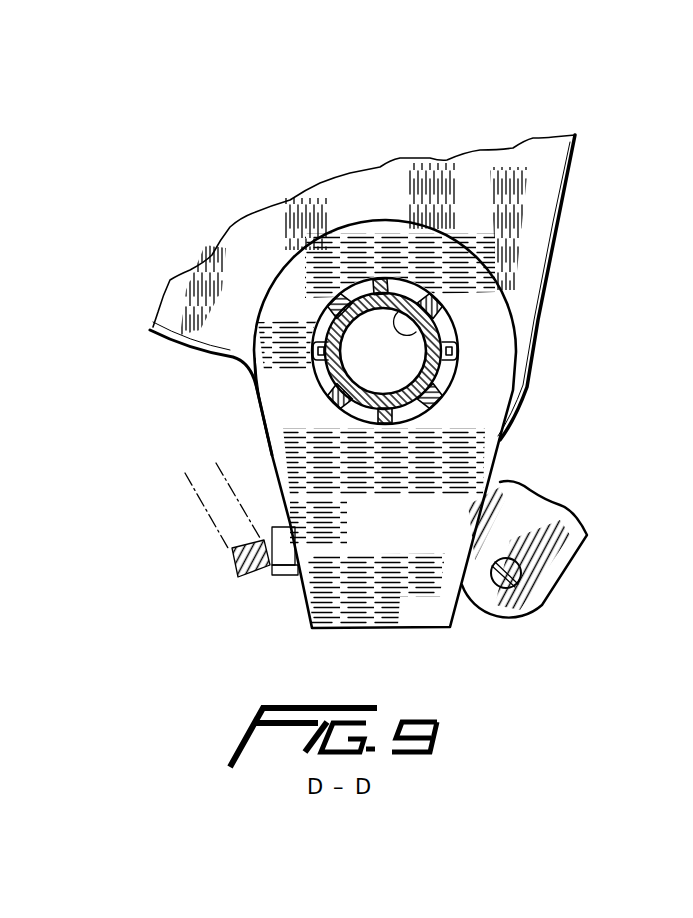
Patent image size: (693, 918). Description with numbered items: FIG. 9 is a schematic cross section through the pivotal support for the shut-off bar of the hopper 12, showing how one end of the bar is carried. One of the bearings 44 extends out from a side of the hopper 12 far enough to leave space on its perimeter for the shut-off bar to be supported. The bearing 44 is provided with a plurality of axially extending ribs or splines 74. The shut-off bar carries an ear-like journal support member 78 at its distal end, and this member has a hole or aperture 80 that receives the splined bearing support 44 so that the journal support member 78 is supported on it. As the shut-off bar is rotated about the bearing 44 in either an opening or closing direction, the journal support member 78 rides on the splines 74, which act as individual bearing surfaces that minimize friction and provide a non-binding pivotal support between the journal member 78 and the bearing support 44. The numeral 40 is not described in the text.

The hopper 12 is at (577, 153).
The pivot shaft bore 40 is at (443, 323).
The bearing 44 is at (380, 292).
The ribs or splines 74 is at (324, 290).
The journal support member 78 is at (399, 543).
The hole or aperture 80 is at (458, 379).